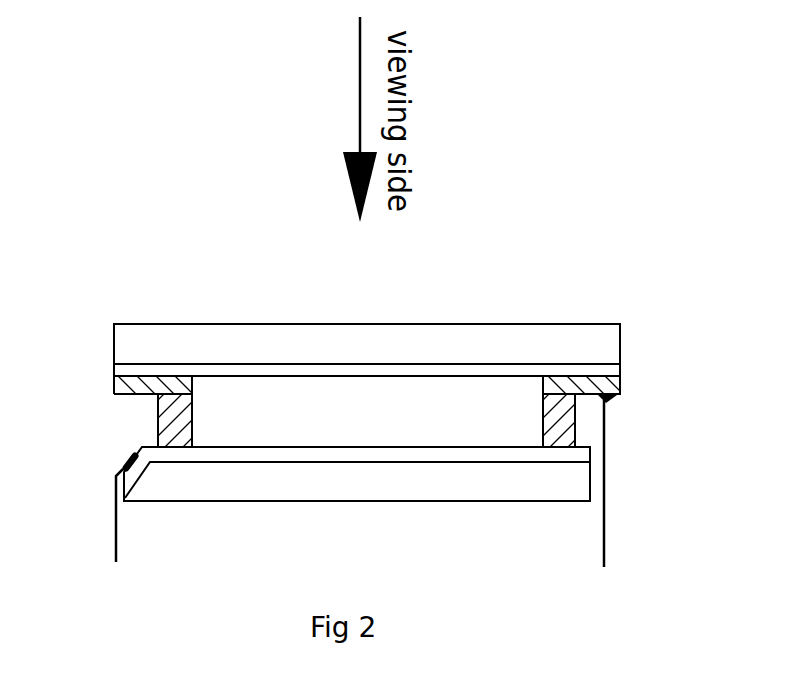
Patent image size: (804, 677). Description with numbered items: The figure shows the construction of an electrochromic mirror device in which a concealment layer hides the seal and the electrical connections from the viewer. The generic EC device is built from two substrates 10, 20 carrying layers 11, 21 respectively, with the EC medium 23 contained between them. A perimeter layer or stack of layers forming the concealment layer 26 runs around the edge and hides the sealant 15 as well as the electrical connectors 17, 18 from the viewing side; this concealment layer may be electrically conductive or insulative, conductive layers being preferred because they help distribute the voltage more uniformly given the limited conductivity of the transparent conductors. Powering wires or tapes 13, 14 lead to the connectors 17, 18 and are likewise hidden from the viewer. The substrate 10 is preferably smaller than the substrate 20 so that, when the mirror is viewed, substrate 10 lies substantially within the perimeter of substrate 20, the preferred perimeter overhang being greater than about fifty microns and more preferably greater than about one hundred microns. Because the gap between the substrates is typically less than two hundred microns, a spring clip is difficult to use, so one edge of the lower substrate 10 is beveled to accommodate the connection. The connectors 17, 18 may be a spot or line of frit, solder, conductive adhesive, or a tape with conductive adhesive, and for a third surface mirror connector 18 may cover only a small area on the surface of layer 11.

The substrate 10 is at (307, 480).
The layer 11 is at (366, 454).
The powering wire or tape 13 is at (605, 528).
The powering wire or tape 14 is at (118, 538).
The sealant 15 is at (173, 423).
The electrical connector 17 is at (608, 402).
The electrical connector 18 is at (120, 453).
The substrate 20 is at (354, 347).
The layer 21 is at (443, 377).
The EC medium 23 is at (266, 417).
The concealment layer 26 is at (117, 389).